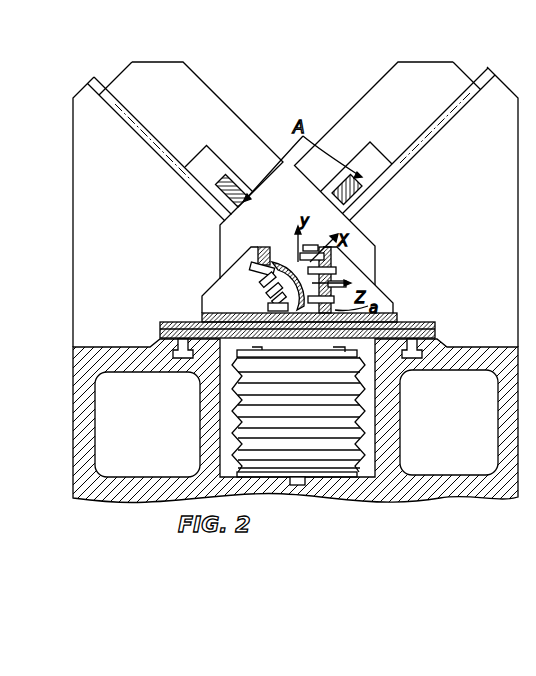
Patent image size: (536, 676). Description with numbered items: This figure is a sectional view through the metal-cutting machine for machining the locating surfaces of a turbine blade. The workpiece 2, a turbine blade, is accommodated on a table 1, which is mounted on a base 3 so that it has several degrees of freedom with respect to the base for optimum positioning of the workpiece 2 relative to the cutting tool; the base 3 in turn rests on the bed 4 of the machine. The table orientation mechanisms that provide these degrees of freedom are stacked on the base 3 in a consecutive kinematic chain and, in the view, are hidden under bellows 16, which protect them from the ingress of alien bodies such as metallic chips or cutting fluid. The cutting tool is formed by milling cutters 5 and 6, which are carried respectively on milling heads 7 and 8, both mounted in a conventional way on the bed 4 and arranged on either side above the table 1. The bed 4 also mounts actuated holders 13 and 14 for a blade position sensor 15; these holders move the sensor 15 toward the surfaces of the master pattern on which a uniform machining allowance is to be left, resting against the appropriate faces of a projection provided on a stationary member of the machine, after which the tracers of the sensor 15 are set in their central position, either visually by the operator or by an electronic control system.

The table 1 is at (400, 326).
The workpiece 2 is at (281, 268).
The base 3 is at (355, 465).
The bed 4 is at (97, 358).
The milling cutter 5 is at (224, 176).
The milling cutter 6 is at (360, 187).
The milling head 7 is at (199, 96).
The milling head 8 is at (383, 92).
The actuated holder 13 is at (215, 295).
The actuated holder 14 is at (362, 278).
The blade position sensor 15 is at (330, 258).
The bellows 16 is at (362, 405).